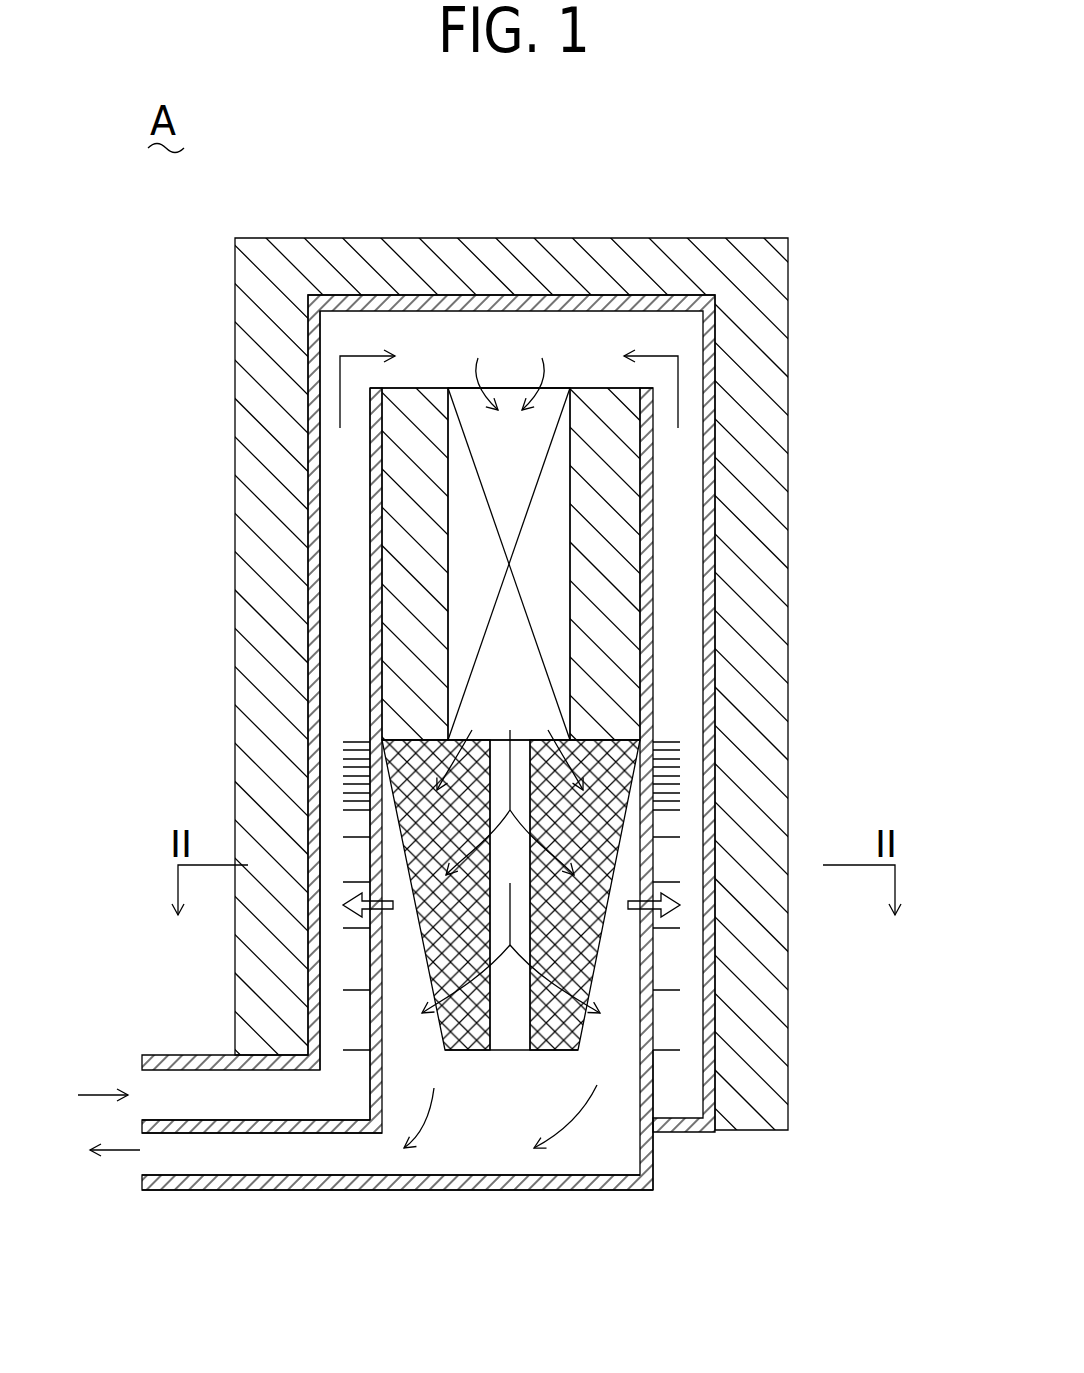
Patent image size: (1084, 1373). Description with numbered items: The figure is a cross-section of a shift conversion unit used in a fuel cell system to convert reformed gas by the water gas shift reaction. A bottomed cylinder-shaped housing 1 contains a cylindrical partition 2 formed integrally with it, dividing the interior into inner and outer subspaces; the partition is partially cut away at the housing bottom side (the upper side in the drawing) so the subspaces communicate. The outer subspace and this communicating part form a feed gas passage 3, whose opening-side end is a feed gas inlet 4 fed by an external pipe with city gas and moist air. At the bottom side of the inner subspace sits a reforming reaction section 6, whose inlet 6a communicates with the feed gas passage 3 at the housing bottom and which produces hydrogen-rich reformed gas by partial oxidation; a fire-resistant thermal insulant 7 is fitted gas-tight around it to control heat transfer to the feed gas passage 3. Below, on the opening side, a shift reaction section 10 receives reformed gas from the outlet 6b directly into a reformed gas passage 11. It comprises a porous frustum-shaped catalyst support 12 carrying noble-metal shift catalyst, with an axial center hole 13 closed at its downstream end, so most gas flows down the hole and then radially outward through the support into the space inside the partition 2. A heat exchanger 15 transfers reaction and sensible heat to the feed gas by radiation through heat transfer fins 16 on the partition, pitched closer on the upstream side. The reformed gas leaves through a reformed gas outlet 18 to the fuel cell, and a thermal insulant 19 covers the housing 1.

The housing 1 is at (390, 295).
The partition 2 is at (370, 553).
The feed gas passage 3 is at (348, 662).
The feed gas inlet 4 is at (258, 1097).
The reforming reaction section 6 is at (552, 386).
The inlet 6a is at (467, 388).
The outlet 6b is at (572, 800).
The thermal insulant 7 is at (390, 462).
The shift reaction section 10 is at (608, 963).
The reformed gas passage 11 is at (470, 1098).
The catalyst support 12 is at (568, 1047).
The center hole 13 is at (528, 1030).
The heat exchanger 15 is at (350, 928).
The heat transfer fins 16 is at (343, 745).
The reformed gas outlet 18 is at (323, 1162).
The thermal insulant 19 is at (760, 297).